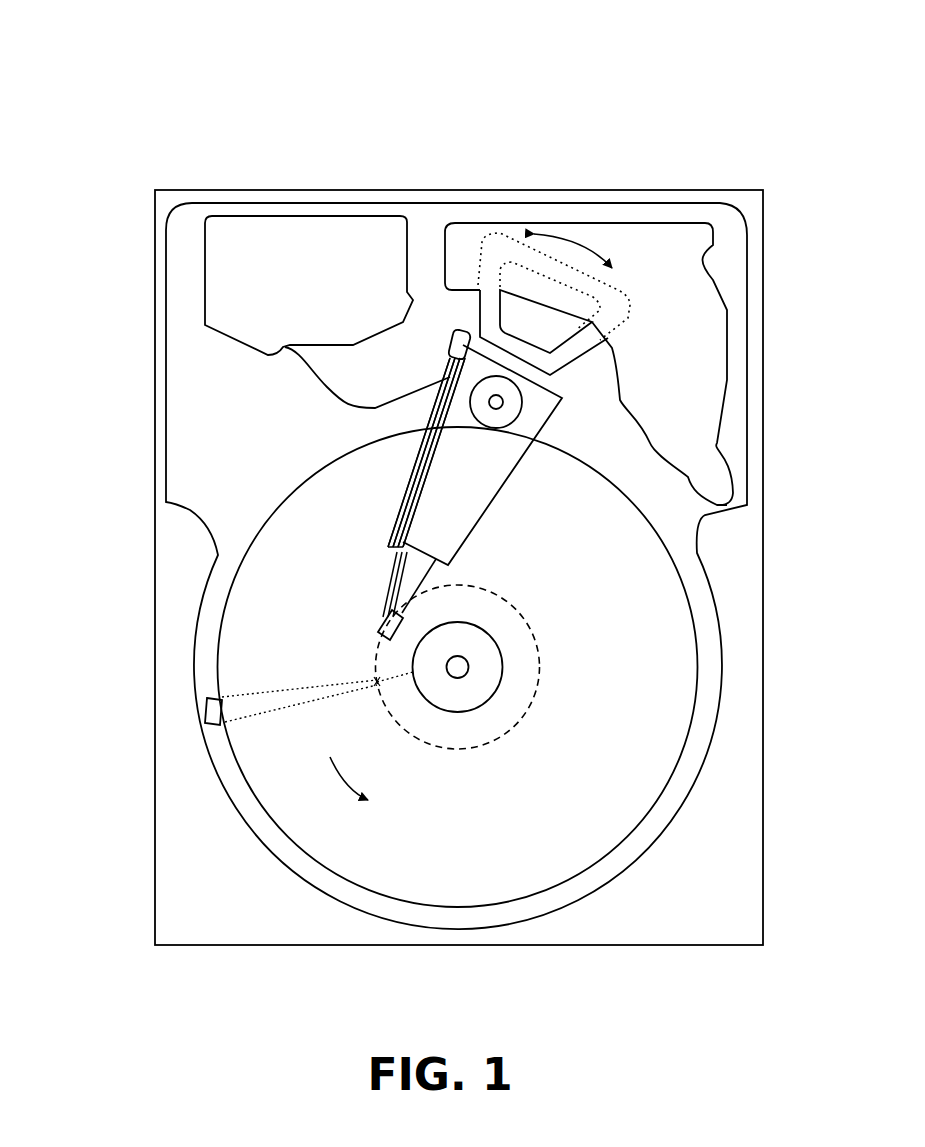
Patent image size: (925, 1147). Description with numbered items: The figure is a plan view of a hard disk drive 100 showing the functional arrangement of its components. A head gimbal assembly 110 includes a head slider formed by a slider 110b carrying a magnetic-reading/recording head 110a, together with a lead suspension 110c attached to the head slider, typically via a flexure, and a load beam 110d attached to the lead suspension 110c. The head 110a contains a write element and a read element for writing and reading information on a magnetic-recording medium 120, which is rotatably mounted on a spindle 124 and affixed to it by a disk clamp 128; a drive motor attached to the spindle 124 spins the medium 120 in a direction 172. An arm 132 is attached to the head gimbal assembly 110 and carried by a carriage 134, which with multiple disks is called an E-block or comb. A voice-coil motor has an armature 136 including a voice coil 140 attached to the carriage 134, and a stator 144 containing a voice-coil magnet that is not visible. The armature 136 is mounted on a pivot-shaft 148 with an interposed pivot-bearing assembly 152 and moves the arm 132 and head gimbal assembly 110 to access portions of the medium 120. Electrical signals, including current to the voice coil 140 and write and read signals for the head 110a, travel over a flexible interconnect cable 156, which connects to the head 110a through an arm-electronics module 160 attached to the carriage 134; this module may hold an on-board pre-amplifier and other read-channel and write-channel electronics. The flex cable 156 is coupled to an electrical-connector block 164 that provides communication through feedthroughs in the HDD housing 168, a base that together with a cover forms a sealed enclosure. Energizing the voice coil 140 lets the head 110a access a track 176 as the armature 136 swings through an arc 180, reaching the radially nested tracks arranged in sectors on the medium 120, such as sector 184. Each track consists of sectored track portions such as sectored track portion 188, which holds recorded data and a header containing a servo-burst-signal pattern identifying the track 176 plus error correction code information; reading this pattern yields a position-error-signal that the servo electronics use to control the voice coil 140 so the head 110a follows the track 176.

The hard disk drive 100 is at (88, 75).
The head gimbal assembly 110 is at (84, 487).
The magnetic-reading/recording head 110a is at (377, 634).
The slider 110b is at (388, 607).
The lead suspension 110c is at (397, 570).
The load beam 110d is at (393, 547).
The magnetic-recording medium 120 is at (630, 622).
The spindle 124 is at (460, 666).
The disk clamp 128 is at (482, 682).
The arm 132 is at (450, 513).
The carriage 134 is at (513, 433).
The armature 136 is at (478, 292).
The voice coil 140 is at (490, 300).
The stator 144 is at (697, 312).
The pivot-shaft 148 is at (507, 403).
The pivot-bearing assembly 152 is at (507, 415).
The flexible interconnect cable 156 is at (320, 381).
The arm-electronics module 160 is at (450, 372).
The electrical-connector block 164 is at (228, 285).
The HDD housing 168 is at (750, 205).
The direction 172 is at (377, 774).
The track 176 is at (528, 630).
The arc 180 is at (548, 295).
The sector 184 is at (205, 710).
The sectored track portion 188 is at (368, 685).